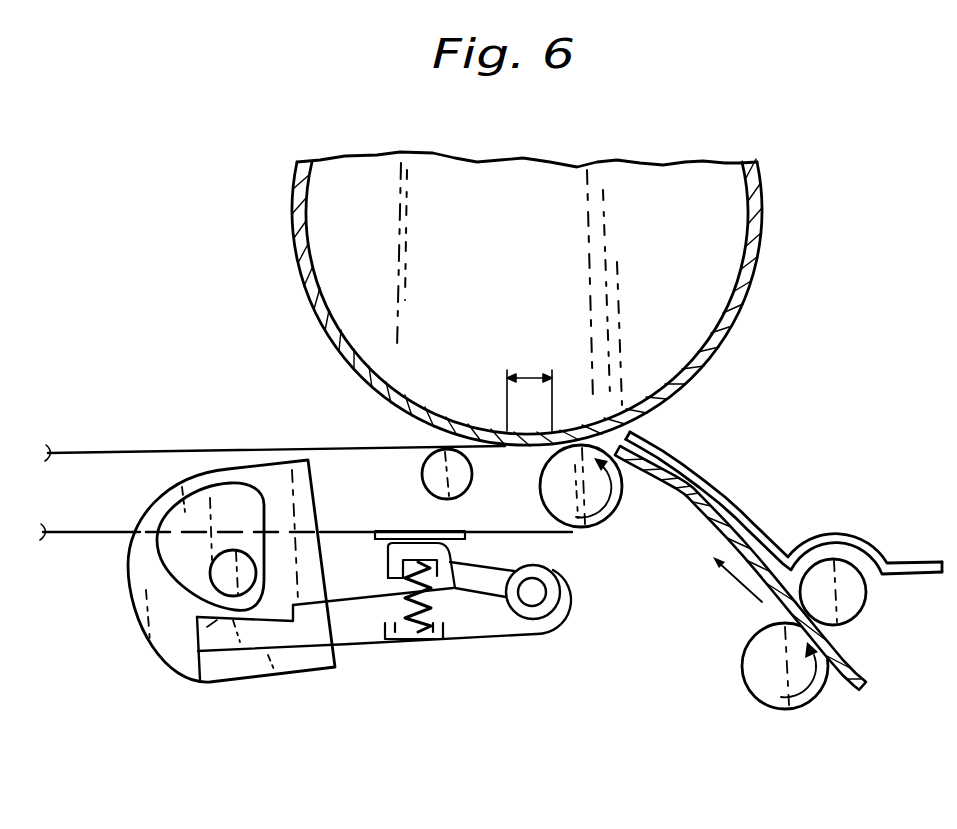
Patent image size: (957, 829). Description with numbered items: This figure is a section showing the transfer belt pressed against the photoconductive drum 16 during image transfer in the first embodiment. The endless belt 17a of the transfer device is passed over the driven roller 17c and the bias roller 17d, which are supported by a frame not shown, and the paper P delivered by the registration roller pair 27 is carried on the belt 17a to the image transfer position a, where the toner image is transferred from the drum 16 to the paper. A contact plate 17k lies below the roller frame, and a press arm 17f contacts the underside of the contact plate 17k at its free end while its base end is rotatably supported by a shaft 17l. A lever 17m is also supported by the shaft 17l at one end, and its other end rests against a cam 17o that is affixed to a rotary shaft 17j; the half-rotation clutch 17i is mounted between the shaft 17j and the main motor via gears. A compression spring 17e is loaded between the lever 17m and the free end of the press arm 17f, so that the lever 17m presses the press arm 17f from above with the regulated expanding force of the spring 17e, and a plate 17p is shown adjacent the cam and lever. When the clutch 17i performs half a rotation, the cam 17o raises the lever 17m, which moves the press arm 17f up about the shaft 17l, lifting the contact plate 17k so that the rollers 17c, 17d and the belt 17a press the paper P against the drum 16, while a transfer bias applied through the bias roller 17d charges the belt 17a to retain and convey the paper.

The photoconductive drum 16 is at (754, 261).
The image transfer position a is at (528, 372).
The endless belt 17a is at (142, 452).
The cam 17o is at (181, 560).
The rotary shaft 17j is at (213, 581).
The plate 17p is at (203, 678).
The half-rotation clutch 17i is at (272, 662).
The lever 17m is at (478, 623).
The shaft 17l is at (550, 632).
The press arm 17f is at (557, 597).
The contact plate 17k is at (383, 543).
The compression spring 17e is at (400, 608).
The bias roller 17d is at (452, 489).
The driven roller 17c is at (613, 508).
The registration roller pair 27 is at (843, 613).
The recording paper P is at (865, 671).